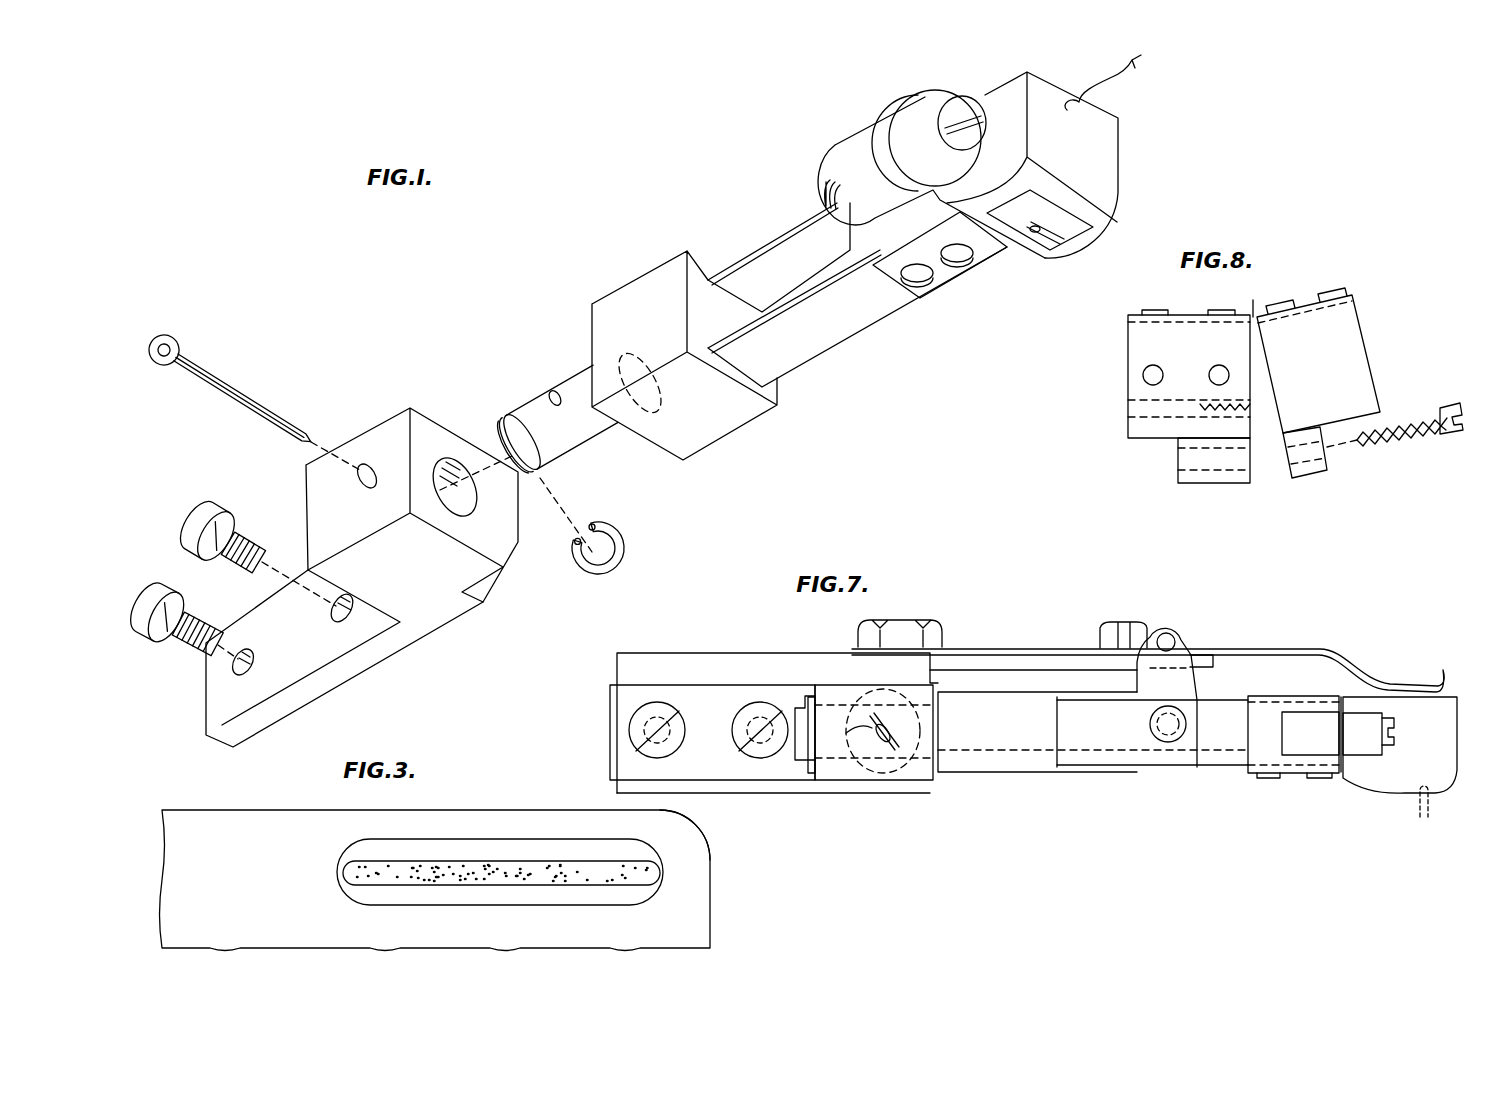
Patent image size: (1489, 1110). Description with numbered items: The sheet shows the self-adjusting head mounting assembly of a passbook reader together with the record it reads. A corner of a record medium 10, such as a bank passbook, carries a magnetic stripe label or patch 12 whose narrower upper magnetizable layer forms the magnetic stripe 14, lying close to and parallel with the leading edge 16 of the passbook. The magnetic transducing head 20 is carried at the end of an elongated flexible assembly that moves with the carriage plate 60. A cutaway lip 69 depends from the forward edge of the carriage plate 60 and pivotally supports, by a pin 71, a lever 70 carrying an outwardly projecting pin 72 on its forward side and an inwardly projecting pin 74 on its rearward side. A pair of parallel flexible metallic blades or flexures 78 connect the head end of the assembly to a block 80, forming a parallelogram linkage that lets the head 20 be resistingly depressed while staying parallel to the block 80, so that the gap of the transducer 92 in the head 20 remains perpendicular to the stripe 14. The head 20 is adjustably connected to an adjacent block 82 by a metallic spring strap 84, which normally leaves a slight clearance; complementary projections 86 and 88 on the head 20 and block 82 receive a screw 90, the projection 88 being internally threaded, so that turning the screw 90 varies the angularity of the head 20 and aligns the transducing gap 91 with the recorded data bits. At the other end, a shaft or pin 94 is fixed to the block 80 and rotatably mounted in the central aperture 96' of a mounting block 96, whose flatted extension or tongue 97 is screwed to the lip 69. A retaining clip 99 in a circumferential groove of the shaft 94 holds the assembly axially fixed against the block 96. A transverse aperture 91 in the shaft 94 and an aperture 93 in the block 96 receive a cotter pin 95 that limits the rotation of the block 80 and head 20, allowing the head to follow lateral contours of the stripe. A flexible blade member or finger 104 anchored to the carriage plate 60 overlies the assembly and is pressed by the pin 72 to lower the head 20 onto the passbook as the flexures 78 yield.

In FIG. 3, the record medium 10 is at (254, 864).
In FIG. 3, the magnetic stripe label or patch 12 is at (355, 849).
In FIG. 3, the magnetic stripe 14 is at (343, 873).
In FIG. 3, the leading edge 16 is at (530, 810).
In FIG. 1, the magnetic transducing head 20 is at (1003, 88).
In FIG. 8, the magnetic transducing head 20 is at (1298, 364).
In FIG. 7, the magnetic transducing head 20 is at (1400, 790).
In FIG. 7, the carriage plate 60 is at (696, 660).
In FIG. 7, the cutaway lip 69 is at (715, 796).
In FIG. 7, the lever 70 is at (1196, 690).
In FIG. 7, the pin 71 is at (895, 735).
In FIG. 7, the outwardly projecting pin 72 is at (1177, 636).
In FIG. 7, the inwardly projecting pin 74 is at (1170, 742).
In FIG. 1, the flexible metallic blades or flexures 78 is at (768, 267).
In FIG. 7, the flexible metallic blades or flexures 78 is at (1127, 700).
In FIG. 1, the block 80 is at (617, 295).
In FIG. 7, the block 80 is at (1000, 774).
In FIG. 1, the block 82 is at (860, 223).
In FIG. 8, the block 82 is at (1171, 364).
In FIG. 7, the block 82 is at (1260, 735).
In FIG. 8, the metallic spring strap 84 is at (1253, 313).
In FIG. 7, the metallic spring strap 84 is at (1350, 717).
In FIG. 1, the projection 86 is at (913, 110).
In FIG. 8, the projection 86 is at (1313, 478).
In FIG. 7, the projection 86 is at (1360, 742).
In FIG. 1, the projection 88 is at (866, 147).
In FIG. 8, the projection 88 is at (1224, 483).
In FIG. 7, the projection 88 is at (1303, 742).
In FIG. 1, the screw 90 is at (958, 107).
In FIG. 8, the screw 90 is at (1370, 447).
In FIG. 7, the screw 90 is at (1395, 737).
In FIG. 1, the transducing gap / transverse aperture 91 is at (548, 393).
In FIG. 7, the transducing gap / transverse aperture 91 is at (1428, 816).
In FIG. 1, the magnetic transducer 92 is at (1062, 230).
In FIG. 1, the aperture 93 is at (362, 483).
In FIG. 7, the aperture 93 is at (882, 752).
In FIG. 1, the shaft or pin 94 is at (591, 437).
In FIG. 7, the shaft or pin 94 is at (800, 762).
In FIG. 1, the cotter pin 95 is at (251, 396).
In FIG. 7, the cotter pin 95 is at (905, 752).
In FIG. 1, the mounting block 96 is at (412, 484).
In FIG. 7, the mounting block 96 is at (874, 760).
In FIG. 1, the central aperture 96' is at (468, 450).
In FIG. 1, the flatted extension or tongue 97 is at (272, 654).
In FIG. 7, the flatted extension or tongue 97 is at (691, 760).
In FIG. 1, the retaining clip 99 is at (596, 590).
In FIG. 7, the retaining clip 99 is at (811, 776).
In FIG. 7, the flexible blade member or finger 104 is at (1300, 648).